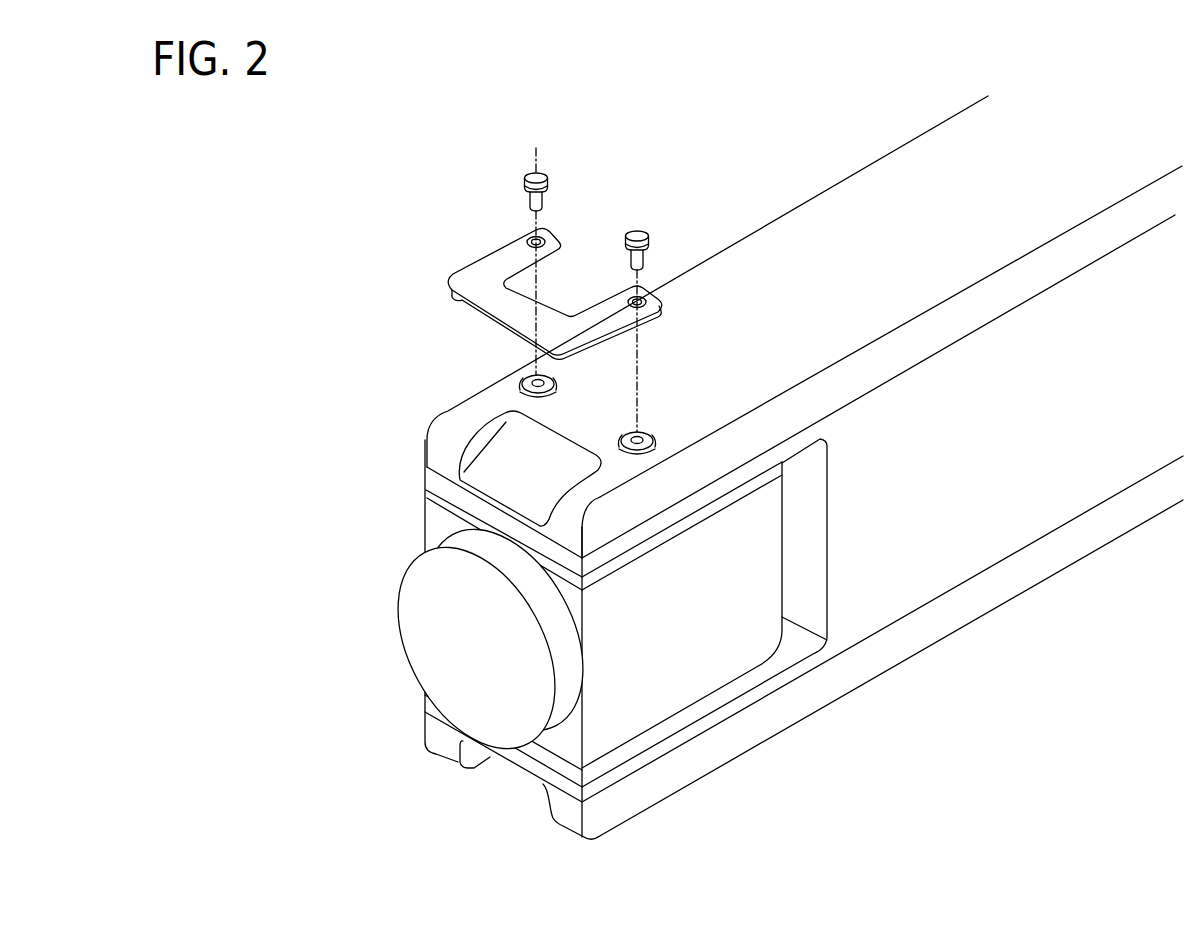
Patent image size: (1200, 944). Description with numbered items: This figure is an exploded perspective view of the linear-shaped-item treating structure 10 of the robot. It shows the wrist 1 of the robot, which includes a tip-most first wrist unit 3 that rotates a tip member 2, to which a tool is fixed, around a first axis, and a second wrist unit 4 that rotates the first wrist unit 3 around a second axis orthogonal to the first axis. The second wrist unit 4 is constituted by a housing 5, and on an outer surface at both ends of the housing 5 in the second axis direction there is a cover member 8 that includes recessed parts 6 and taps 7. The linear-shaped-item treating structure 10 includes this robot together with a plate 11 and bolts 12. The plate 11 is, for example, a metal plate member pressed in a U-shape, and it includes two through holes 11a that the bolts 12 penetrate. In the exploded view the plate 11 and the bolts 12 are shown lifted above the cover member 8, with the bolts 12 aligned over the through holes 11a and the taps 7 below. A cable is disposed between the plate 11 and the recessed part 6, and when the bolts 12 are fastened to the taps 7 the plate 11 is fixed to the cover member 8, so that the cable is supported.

The wrist 1 is at (349, 300).
The tip member 2 is at (423, 635).
The first wrist unit 3 is at (638, 698).
The second wrist unit 4 is at (787, 258).
The housing 5 is at (962, 540).
The recessed part 6 is at (493, 453).
The tap 7 is at (530, 380).
The cover member 8 is at (885, 185).
The linear-shaped-item treating structure 10 is at (441, 190).
The plate 11 is at (480, 273).
The through hole 11a is at (530, 241).
The bolt 12 is at (537, 172).